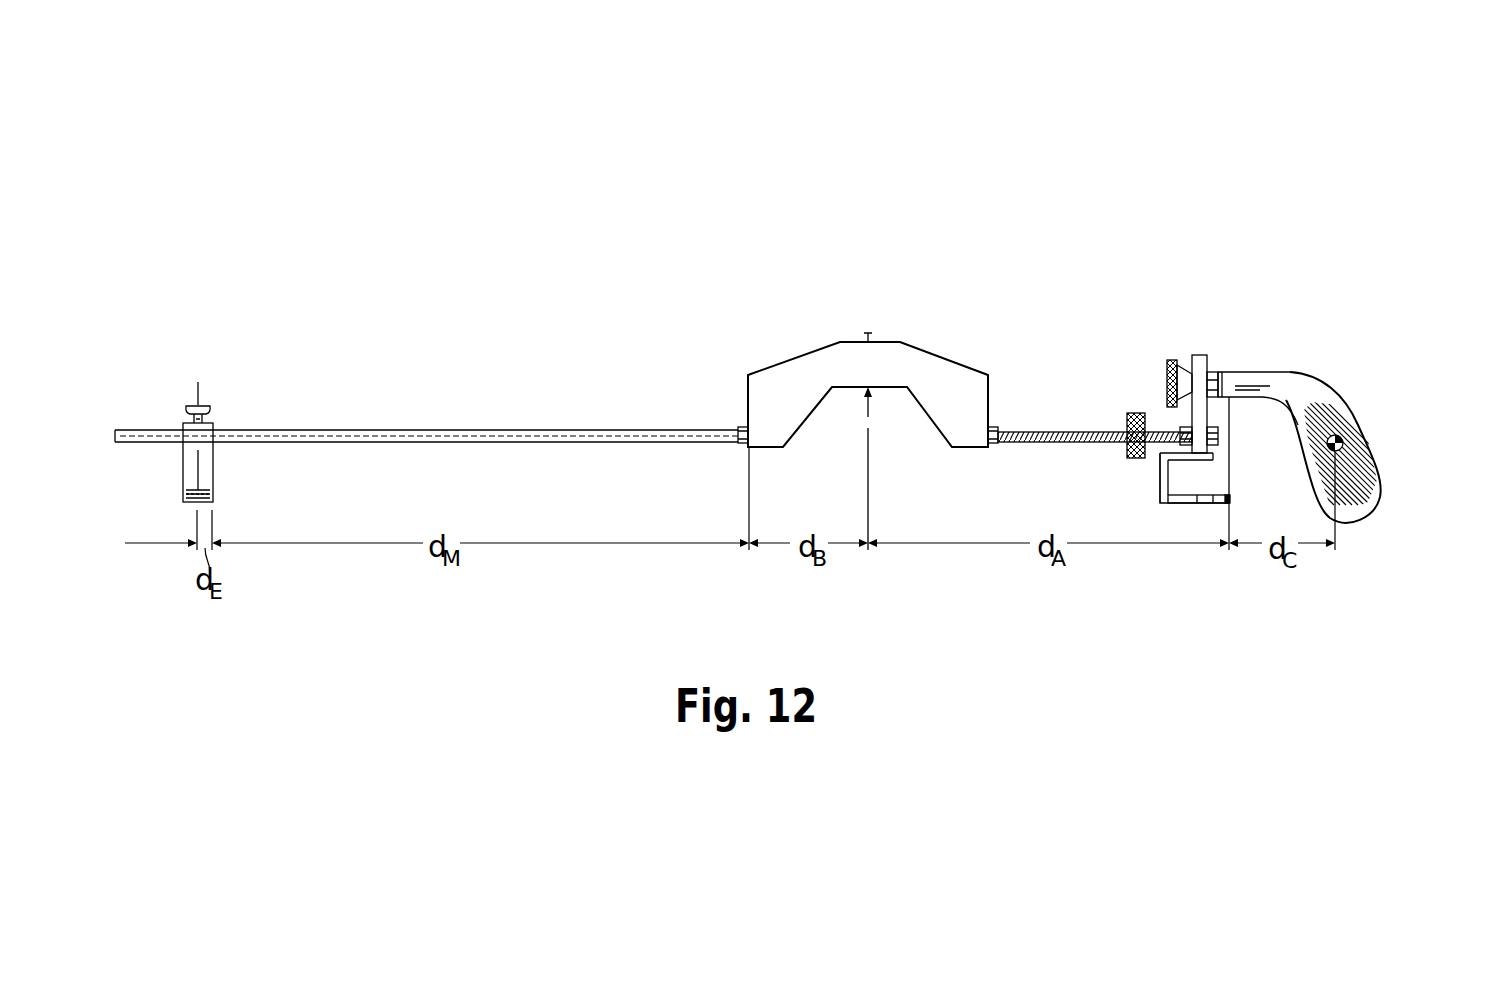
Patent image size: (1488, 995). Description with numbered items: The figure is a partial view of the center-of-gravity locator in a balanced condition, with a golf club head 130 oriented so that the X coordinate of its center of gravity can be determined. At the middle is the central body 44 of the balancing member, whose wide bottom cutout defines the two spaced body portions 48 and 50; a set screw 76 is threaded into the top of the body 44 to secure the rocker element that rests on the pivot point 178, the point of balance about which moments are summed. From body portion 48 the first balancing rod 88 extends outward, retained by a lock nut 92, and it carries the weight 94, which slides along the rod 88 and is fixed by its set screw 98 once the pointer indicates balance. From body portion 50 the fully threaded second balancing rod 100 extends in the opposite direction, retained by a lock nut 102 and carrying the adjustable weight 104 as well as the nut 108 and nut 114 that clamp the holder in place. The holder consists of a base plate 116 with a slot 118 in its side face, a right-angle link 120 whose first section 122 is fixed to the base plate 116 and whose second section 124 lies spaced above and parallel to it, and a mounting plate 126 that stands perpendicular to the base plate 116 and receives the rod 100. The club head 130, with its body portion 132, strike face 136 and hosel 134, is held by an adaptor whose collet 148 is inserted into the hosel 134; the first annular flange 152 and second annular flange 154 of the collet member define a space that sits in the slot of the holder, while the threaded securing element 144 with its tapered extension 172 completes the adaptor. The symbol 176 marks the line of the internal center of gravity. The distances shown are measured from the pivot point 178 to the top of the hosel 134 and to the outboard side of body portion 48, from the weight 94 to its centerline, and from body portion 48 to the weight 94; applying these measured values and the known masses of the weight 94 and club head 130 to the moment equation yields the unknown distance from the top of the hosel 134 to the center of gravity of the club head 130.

The central body 44 is at (772, 360).
The body portion 48 is at (768, 400).
The body portion 50 is at (980, 390).
The set screw 76 is at (870, 330).
The first balancing rod 88 is at (412, 426).
The nut 92 is at (741, 447).
The weight 94 is at (212, 478).
The set screw 98 is at (210, 403).
The second balancing rod 100 is at (1060, 431).
The nut 102 is at (992, 450).
The adjustable weight 104 is at (1138, 414).
The nut 108 is at (1177, 428).
The nut 114 is at (1220, 418).
The base plate 116 is at (1231, 500).
The slot 118 is at (1203, 506).
The right-angle link 120 is at (1150, 476).
The first section 122 is at (1160, 490).
The second section 124 is at (1212, 457).
The mounting plate 126 is at (1208, 370).
The golf club head 130 is at (1412, 443).
The body portion 132 is at (1362, 412).
The hosel 134 is at (1268, 372).
The strike face 136 is at (1367, 463).
The threaded securing element 144 is at (1166, 350).
The collet 148 is at (1275, 370).
The first annular flange 152 is at (1223, 358).
The second annular flange 154 is at (1195, 354).
The tapered extension 172 is at (1183, 362).
The representative symbol 176 is at (1350, 485).
The pivot point 178 is at (872, 547).